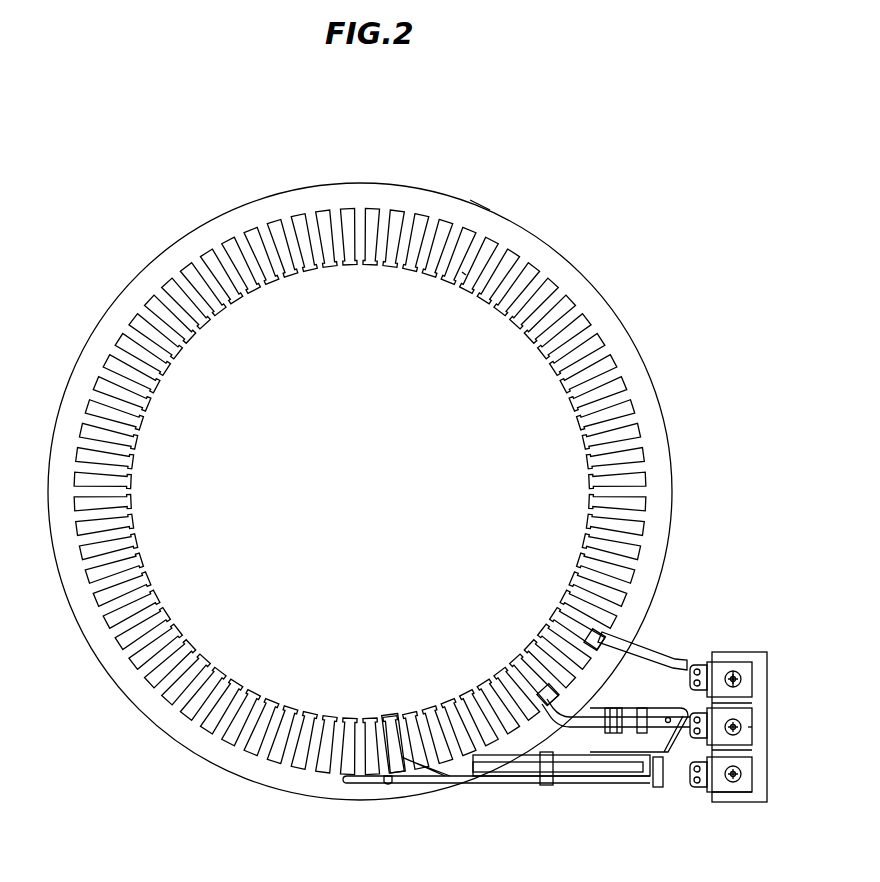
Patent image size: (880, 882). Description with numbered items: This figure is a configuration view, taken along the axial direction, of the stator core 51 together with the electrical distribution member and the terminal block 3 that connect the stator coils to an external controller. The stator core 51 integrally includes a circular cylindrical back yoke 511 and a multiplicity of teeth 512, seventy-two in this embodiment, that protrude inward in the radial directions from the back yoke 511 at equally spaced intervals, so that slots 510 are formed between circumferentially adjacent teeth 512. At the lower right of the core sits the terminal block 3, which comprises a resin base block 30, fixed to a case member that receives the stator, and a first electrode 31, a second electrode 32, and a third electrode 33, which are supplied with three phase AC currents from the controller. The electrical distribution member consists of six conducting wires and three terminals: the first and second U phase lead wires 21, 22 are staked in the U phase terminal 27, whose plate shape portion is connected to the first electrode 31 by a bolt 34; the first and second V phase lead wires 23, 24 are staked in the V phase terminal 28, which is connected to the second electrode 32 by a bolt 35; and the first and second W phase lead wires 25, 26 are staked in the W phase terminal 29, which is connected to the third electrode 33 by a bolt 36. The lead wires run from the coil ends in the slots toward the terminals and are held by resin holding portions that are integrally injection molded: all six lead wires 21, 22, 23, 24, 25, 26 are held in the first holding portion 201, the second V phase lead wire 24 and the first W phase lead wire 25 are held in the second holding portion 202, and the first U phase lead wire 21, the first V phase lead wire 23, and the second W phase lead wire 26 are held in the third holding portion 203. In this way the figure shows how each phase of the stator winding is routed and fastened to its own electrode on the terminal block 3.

The stator core 51 is at (190, 240).
The slots 510 is at (468, 282).
The back yoke 511 is at (488, 222).
The teeth 512 is at (482, 285).
The terminal block 3 is at (781, 641).
The first electrode 31 is at (745, 662).
The second electrode 32 is at (745, 710).
The third electrode 33 is at (745, 758).
The U phase terminal 27 is at (742, 680).
The bolt 35 is at (740, 728).
The bolt 36 is at (740, 777).
The bolt 34 is at (734, 678).
The V phase terminal 28 is at (746, 735).
The W phase terminal 29 is at (745, 790).
The base block 30 is at (742, 797).
The second U phase lead wire 22 is at (664, 660).
The first W phase lead wire 25 is at (592, 709).
The second holding portion 202 is at (622, 714).
The first holding portion 201 is at (663, 770).
The second V phase lead wire 24 is at (558, 731).
The first U phase lead wire 21 is at (518, 760).
The third holding portion 203 is at (543, 773).
The second W phase lead wire 26 is at (417, 776).
The first V phase lead wire 23 is at (378, 776).